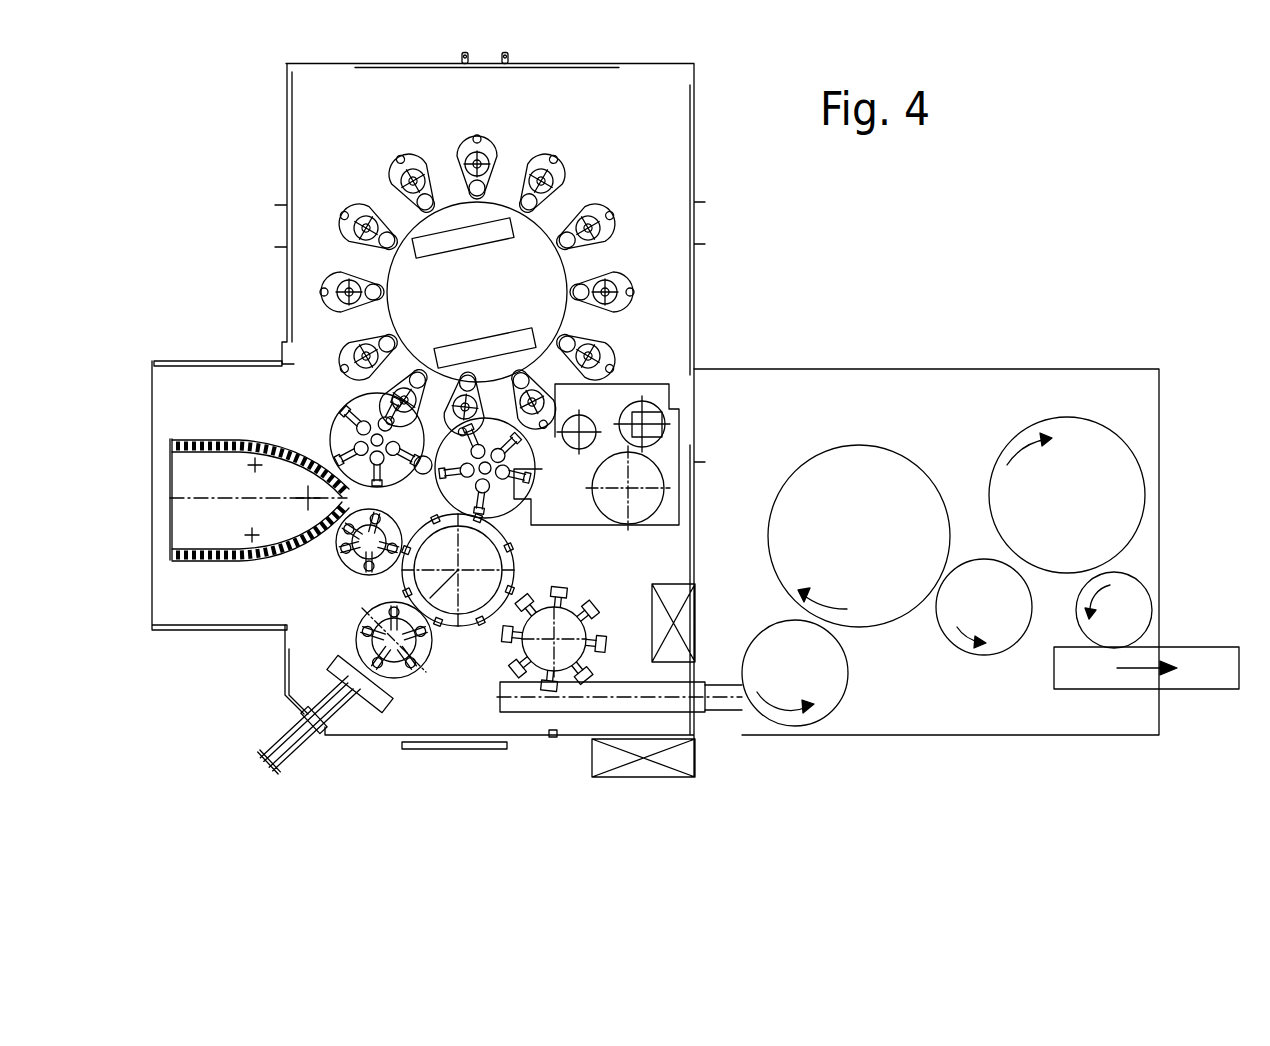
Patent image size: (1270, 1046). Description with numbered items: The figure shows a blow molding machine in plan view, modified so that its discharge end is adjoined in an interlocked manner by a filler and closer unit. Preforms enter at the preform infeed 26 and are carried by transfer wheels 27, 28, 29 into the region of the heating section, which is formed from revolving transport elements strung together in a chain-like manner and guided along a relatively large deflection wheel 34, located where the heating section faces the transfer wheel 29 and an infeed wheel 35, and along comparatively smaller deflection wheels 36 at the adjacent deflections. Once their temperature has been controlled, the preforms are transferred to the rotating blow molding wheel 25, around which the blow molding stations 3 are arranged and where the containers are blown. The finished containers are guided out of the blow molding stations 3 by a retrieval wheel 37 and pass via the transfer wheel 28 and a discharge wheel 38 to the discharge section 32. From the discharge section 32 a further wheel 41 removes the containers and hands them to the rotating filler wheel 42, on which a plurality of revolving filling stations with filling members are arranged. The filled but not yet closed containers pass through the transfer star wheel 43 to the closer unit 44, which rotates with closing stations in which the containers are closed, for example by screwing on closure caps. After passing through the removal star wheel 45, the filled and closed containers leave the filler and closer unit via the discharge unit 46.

The blow molding stations 3 is at (320, 280).
The blow molding wheel 25 is at (410, 223).
The preform infeed 26 is at (317, 747).
The transfer wheel 27 is at (417, 683).
The transfer wheel 28 is at (462, 623).
The transfer wheel 29 is at (353, 560).
The discharge section 32 is at (700, 703).
The deflection wheel 34 is at (306, 496).
The infeed wheel 35 is at (373, 392).
The deflection wheels 36 is at (253, 463).
The retrieval wheel 37 is at (537, 480).
The discharge wheel 38 is at (560, 653).
The conveyor drum 41 is at (825, 700).
The filler wheel 42 is at (850, 452).
The transfer star wheel 43 is at (1007, 637).
The closer unit 44 is at (1082, 437).
The removal star wheel 45 is at (1132, 592).
The discharge unit 46 is at (1110, 690).